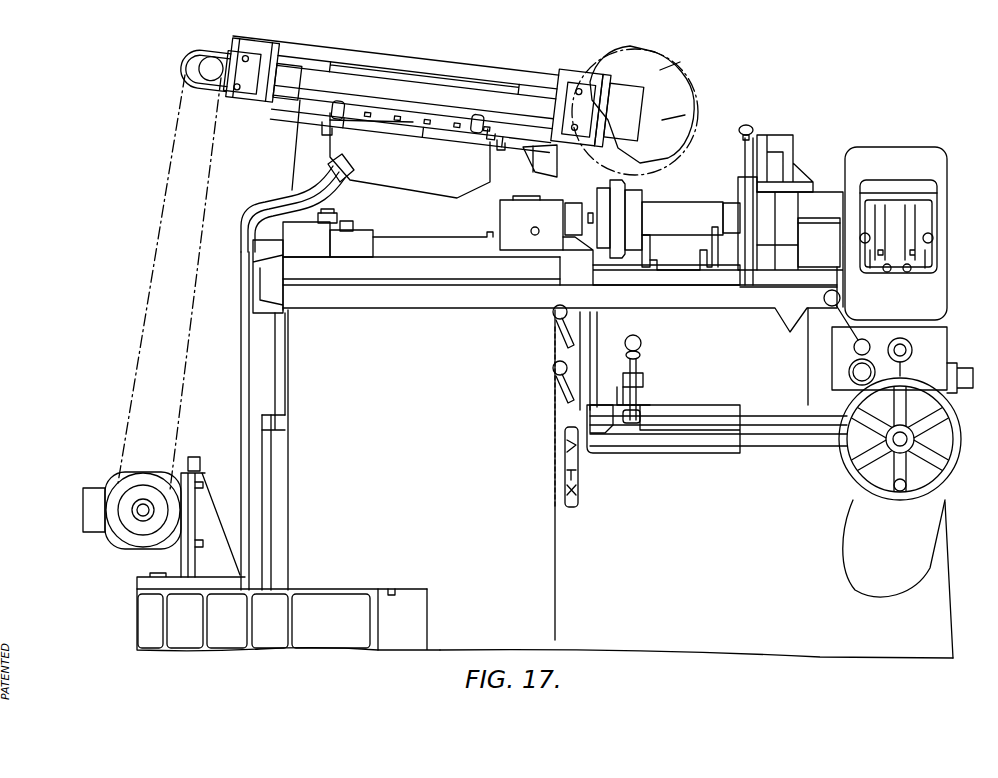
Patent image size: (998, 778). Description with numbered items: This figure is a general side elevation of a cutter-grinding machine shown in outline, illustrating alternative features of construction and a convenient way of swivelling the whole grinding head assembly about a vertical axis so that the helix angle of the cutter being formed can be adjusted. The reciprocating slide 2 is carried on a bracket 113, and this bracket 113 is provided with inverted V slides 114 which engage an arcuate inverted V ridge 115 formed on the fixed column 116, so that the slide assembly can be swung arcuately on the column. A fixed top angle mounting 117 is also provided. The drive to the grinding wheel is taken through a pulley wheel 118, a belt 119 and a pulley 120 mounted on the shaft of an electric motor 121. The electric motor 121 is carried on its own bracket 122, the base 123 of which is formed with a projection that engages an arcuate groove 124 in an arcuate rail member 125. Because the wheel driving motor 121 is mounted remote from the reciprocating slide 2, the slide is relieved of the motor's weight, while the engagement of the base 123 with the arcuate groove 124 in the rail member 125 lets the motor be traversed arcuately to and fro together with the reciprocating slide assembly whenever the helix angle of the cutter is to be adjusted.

The reciprocating slide 2 is at (472, 62).
The bracket 113 is at (303, 165).
The inverted V slides 114 is at (372, 238).
The arcuate inverted V ridge 115 is at (444, 254).
The fixed column 116 is at (354, 336).
The fixed top angle mounting 117 is at (370, 178).
The pulley wheel 118 is at (188, 62).
The belt 119 is at (166, 178).
The pulley 120 is at (140, 535).
The electric motor 121 is at (113, 478).
The bracket 122 is at (214, 467).
The base 123 is at (137, 582).
The arcuate groove 124 is at (393, 589).
The arcuate rail member 125 is at (338, 580).